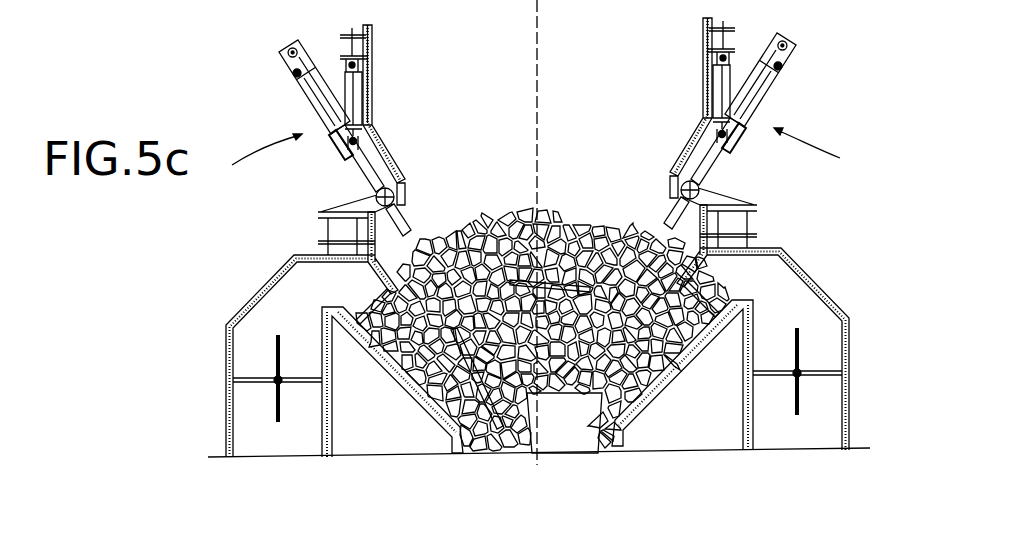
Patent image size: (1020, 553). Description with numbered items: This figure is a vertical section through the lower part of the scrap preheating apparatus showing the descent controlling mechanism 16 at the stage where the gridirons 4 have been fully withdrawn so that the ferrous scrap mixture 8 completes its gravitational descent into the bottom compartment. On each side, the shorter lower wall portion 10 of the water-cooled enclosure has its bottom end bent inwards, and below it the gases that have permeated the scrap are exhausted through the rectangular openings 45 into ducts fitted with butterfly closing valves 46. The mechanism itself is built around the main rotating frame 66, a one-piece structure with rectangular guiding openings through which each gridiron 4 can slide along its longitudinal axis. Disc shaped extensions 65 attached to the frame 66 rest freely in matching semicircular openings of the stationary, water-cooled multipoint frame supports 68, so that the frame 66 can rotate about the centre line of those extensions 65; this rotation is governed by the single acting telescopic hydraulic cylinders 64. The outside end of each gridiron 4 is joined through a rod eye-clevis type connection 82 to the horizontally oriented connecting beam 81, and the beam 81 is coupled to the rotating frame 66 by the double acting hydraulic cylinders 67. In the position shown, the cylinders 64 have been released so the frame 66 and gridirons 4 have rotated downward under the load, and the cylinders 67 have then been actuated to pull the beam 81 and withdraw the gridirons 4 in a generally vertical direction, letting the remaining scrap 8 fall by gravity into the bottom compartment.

The gridirons 4 is at (410, 228).
The ferrous scrap mixture 8 is at (547, 212).
The shorter lower wall portion 10 is at (375, 72).
The descent controlling mechanism 16 is at (536, 159).
The rectangular openings 45 is at (332, 286).
The butterfly closing valves 46 is at (276, 402).
The telescopic hydraulic cylinders 64 is at (345, 90).
The disc shaped extensions 65 is at (377, 195).
The main rotating frame 66 is at (307, 47).
The double acting hydraulic cylinders 67 is at (337, 152).
The multipoint frame supports 68 is at (407, 204).
The connecting beam 81 is at (282, 51).
The rod eye-clevis type connection 82 is at (292, 73).